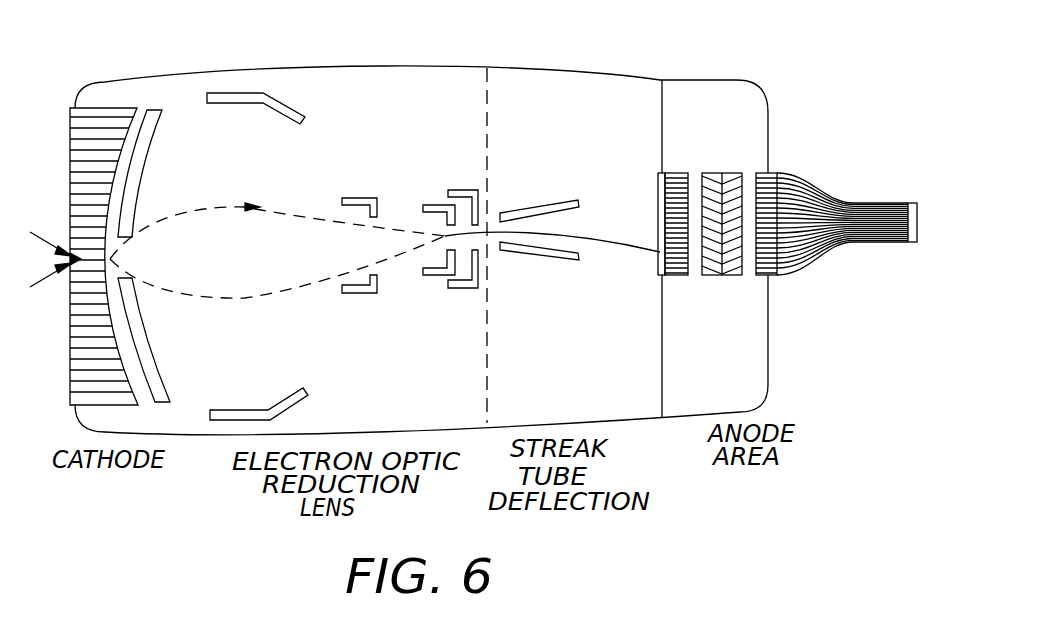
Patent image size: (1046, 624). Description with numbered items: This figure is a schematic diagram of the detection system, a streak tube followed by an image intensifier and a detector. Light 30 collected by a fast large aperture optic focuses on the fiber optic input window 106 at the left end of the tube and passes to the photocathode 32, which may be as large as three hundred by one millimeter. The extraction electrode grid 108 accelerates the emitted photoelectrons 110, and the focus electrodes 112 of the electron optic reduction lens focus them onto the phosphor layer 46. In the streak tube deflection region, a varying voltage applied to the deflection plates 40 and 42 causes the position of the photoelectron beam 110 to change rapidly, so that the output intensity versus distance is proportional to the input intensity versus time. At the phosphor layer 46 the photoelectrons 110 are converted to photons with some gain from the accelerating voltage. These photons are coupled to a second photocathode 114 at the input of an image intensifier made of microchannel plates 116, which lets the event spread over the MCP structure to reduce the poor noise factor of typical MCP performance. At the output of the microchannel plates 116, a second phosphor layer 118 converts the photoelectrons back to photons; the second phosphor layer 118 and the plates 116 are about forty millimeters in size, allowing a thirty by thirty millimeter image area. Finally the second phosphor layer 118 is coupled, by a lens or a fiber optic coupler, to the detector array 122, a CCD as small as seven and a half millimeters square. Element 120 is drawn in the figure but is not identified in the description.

The light 30 is at (45, 259).
The photocathode 32 is at (124, 121).
The deflection plate 40 is at (587, 316).
The deflection plate 42 is at (553, 198).
The phosphor layer 46 is at (660, 175).
The fiber optic input window 106 is at (70, 107).
The extraction electrode grid 108 is at (150, 147).
The photoelectrons 110 is at (222, 207).
The focus electrodes 112 is at (248, 93).
The second photocathode 114 is at (675, 172).
The microchannel plates 116 is at (711, 277).
The second phosphor layer 118 is at (736, 172).
The fiber optic taper 120 is at (822, 263).
The detector array 122 is at (912, 247).